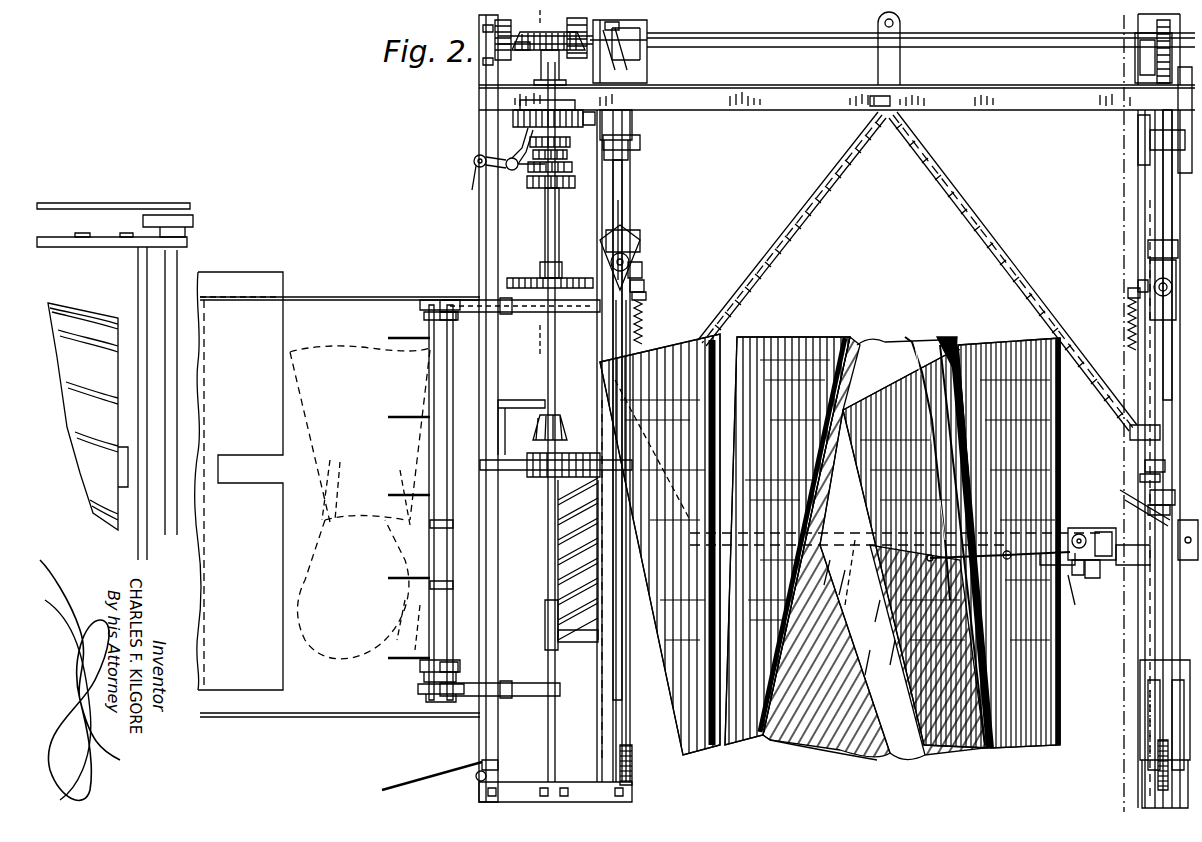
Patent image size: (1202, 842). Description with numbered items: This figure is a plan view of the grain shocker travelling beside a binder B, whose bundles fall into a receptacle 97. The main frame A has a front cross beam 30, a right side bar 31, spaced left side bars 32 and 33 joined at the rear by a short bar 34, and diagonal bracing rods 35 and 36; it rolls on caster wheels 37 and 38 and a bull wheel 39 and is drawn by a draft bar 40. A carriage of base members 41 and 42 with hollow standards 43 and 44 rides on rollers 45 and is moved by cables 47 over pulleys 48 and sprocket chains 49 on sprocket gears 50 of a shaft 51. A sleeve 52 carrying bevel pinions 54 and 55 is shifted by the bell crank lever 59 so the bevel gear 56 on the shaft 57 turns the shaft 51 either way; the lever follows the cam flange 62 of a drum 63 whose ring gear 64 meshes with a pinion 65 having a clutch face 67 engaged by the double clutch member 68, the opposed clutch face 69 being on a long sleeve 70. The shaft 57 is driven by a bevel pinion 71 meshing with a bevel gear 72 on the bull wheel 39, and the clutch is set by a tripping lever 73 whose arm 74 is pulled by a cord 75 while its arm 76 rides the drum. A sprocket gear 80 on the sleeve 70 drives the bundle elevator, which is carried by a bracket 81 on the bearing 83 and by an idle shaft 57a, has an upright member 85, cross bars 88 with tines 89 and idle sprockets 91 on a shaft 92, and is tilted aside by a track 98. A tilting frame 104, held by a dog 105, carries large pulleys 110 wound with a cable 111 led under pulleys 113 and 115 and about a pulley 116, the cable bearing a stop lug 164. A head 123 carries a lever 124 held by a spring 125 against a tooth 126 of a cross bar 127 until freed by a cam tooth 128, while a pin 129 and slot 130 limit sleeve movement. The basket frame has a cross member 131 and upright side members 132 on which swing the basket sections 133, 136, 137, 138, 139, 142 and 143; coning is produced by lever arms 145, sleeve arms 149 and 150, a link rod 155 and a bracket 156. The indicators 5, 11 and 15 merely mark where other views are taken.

The section line 5- 5 is at (1115, 24).
The section line 11- 11 is at (541, 21).
The bracket 15 is at (636, 245).
The front cross beam 30 is at (1065, 107).
The right side bar 31 is at (1160, 225).
The left side bar 32 is at (630, 193).
The left side bar 33 is at (478, 778).
The short bar 34 is at (582, 782).
The bracing rod 35 is at (966, 200).
The bracing rod 36 is at (812, 212).
The caster wheel 37 is at (1150, 186).
The caster wheel 38 is at (1150, 730).
The bull wheel 39 is at (580, 642).
The draft bar 40 is at (900, 25).
The carriage base member 41 is at (1150, 272).
The carriage base member 42 is at (636, 258).
The hollow standard 43 is at (1140, 286).
The hollow standard 44 is at (640, 272).
The rollers 45 is at (622, 144).
The cable 47 is at (615, 697).
The pulley 48 is at (632, 778).
The sprocket chain 49 is at (640, 24).
The sprocket gear 50 is at (612, 23).
The shaft 51 is at (797, 40).
The sleeve 52 is at (552, 30).
The bevel pinion 54 is at (584, 24).
The bevel pinion 55 is at (495, 27).
The bevel gear 56 is at (525, 48).
The longitudinal shaft 57 is at (548, 365).
The idle shaft 57a is at (548, 626).
The bell crank lever 59 is at (640, 76).
The cam acting flange 62 is at (513, 115).
The drum 63 is at (508, 129).
The ring gear 64 is at (585, 118).
The pinion 65 is at (560, 140).
The toothed clutch face 67 is at (560, 153).
The double clutch member 68 is at (565, 167).
The clutch face 69 is at (566, 183).
The long sleeve 70 is at (556, 222).
The bevel pinion 71 is at (534, 428).
The bevel gear 72 is at (546, 505).
The tripping lever 73 is at (530, 170).
The lever arm 74 is at (479, 168).
The cord 75 is at (420, 772).
The lever arm 76 is at (507, 157).
The sprocket gear 80 is at (566, 278).
The bracket 81 is at (516, 312).
The bearing 83 is at (520, 282).
The upright member 85 is at (430, 694).
The cross bars 88 is at (436, 524).
The tines 89 is at (410, 420).
The idle sprockets 91 is at (455, 322).
The shaft 92 is at (436, 585).
The receptacle 97 is at (340, 297).
The track 98 is at (622, 222).
The tilting frame 104 is at (645, 298).
The dog 105 is at (642, 284).
The large pulley 110 is at (560, 568).
The cable 111 is at (622, 176).
The pulley 113 is at (648, 314).
The pulley 115 is at (1150, 248).
The pulley 116 is at (1140, 122).
The head 123 is at (1142, 555).
The lever 124 is at (1158, 497).
The spring 125 is at (1152, 506).
The tooth 126 is at (1152, 466).
The cross bar 127 is at (1150, 478).
The cam tooth 128 is at (1186, 558).
The pin 129 is at (1100, 528).
The slot 130 is at (1104, 546).
The cross member 131 is at (1094, 532).
The upright side member 132 is at (850, 560).
The basket section 133 is at (672, 348).
The basket section 136 is at (820, 336).
The basket section 137 is at (826, 750).
The basket section 138 is at (922, 758).
The basket section 139 is at (988, 345).
The basket section 142 is at (948, 340).
The basket section 143 is at (910, 340).
The lever arms 145 is at (1140, 492).
The arm 149 is at (1100, 574).
The arm 150 is at (1078, 566).
The link rod 155 is at (1072, 605).
The bracket 156 is at (935, 570).
The stop lug 164 is at (1145, 433).
The main frame A is at (988, 79).
The binder B is at (77, 197).